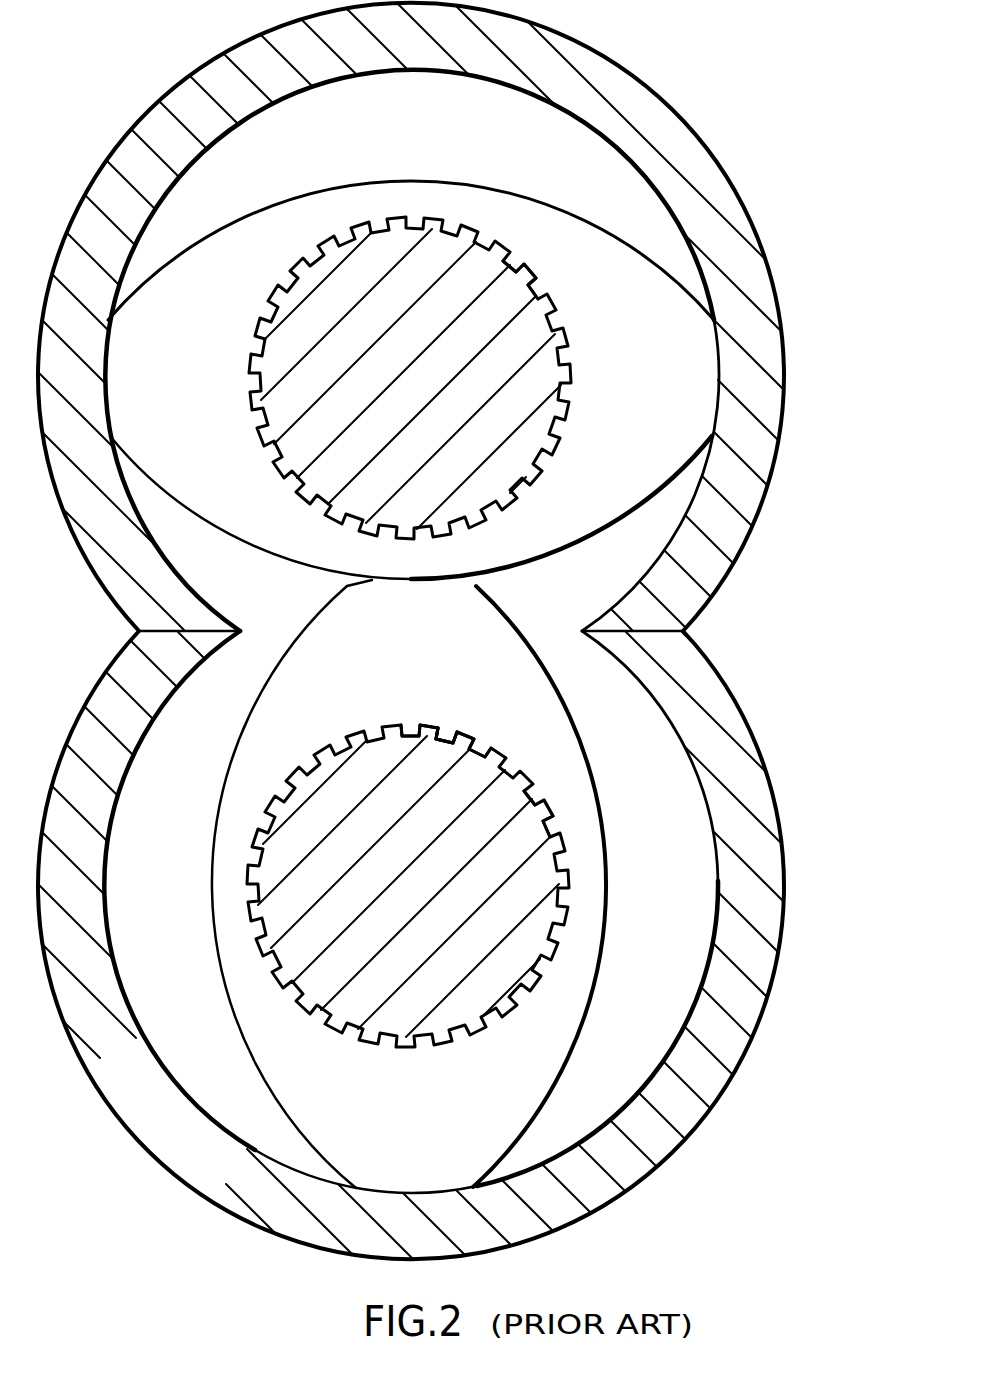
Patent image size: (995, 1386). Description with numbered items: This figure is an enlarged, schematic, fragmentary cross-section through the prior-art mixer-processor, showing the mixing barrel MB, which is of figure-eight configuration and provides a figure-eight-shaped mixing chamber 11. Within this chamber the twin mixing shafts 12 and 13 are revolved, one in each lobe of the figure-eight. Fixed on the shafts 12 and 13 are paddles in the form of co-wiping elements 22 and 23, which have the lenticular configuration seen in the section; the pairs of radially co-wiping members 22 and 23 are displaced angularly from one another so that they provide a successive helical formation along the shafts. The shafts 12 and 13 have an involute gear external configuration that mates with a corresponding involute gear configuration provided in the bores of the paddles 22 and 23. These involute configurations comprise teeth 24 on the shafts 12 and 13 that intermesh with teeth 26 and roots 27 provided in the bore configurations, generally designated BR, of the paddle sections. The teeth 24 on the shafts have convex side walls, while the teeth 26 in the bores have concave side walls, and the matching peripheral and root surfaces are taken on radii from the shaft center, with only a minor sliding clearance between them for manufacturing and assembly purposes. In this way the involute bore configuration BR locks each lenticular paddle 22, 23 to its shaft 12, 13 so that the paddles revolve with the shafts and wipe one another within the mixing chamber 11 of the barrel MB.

The mixing chamber 11 is at (648, 759).
The mixing shaft 12 is at (484, 278).
The mixing shaft 13 is at (530, 800).
The co-wiping element 22 is at (547, 524).
The co-wiping element 23 is at (549, 1034).
The teeth 24 is at (444, 743).
The teeth 26 is at (432, 735).
The roots 27 is at (455, 742).
The bore configuration BR is at (542, 276).
The mixing barrel MB is at (784, 355).